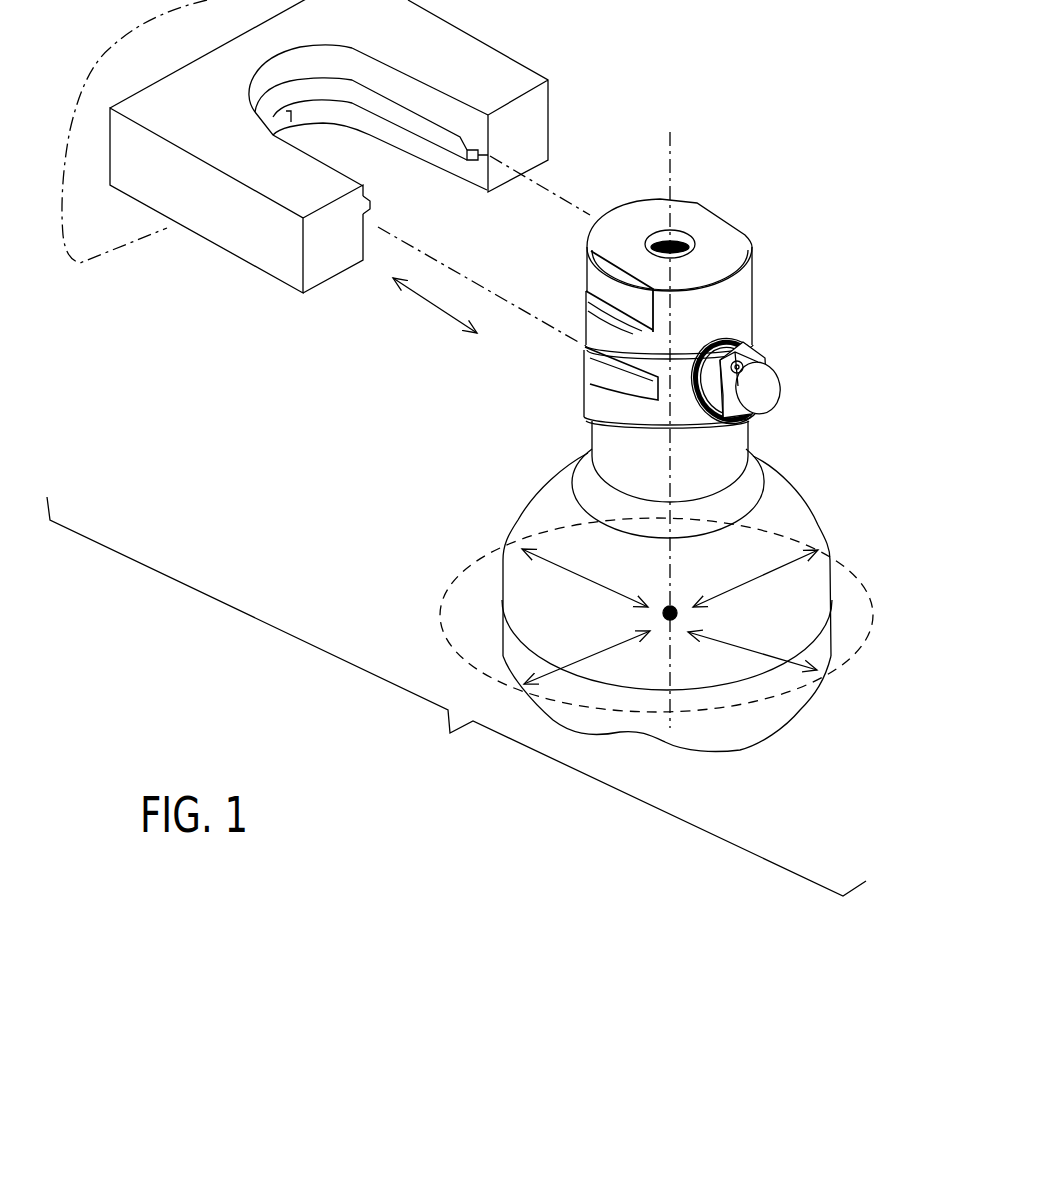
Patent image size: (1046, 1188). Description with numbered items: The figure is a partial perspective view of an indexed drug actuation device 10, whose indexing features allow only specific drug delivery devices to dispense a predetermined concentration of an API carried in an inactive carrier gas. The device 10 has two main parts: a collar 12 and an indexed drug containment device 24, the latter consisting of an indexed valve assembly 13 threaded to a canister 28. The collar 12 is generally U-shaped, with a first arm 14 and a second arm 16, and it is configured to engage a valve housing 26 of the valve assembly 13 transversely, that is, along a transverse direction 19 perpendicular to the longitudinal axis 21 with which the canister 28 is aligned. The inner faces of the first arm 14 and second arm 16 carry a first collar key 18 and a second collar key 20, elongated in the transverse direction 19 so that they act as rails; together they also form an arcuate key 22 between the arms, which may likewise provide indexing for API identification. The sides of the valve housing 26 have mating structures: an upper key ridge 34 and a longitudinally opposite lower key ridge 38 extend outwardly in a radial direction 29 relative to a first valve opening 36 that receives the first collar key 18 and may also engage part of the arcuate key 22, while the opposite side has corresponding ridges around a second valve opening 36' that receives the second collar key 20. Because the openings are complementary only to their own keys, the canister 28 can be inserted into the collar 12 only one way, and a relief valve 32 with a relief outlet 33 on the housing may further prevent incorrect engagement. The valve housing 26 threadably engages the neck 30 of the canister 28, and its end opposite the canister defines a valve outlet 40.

The indexed drug actuation device 10 is at (456, 696).
The collar 12 is at (355, 160).
The indexed valve assembly 13 is at (656, 421).
The first arm 14 is at (250, 250).
The second arm 16 is at (476, 50).
The first collar key 18 is at (366, 203).
The transverse direction 19 is at (432, 306).
The second collar key 20 is at (462, 138).
The longitudinal axis 21 is at (674, 162).
The arcuate key 22 is at (321, 82).
The indexed drug containment device 24 is at (771, 363).
The valve housing 26 is at (758, 284).
The canister 28 is at (812, 516).
The radial direction 29 is at (588, 652).
The neck 30 is at (735, 451).
The relief valve 32 is at (775, 386).
The relief outlet 33 is at (757, 352).
The upper key ridge 34 is at (590, 320).
The first valve opening 36 is at (629, 389).
The second valve opening 36' is at (695, 229).
The lower key ridge 38 is at (590, 386).
The valve outlet 40 is at (664, 231).